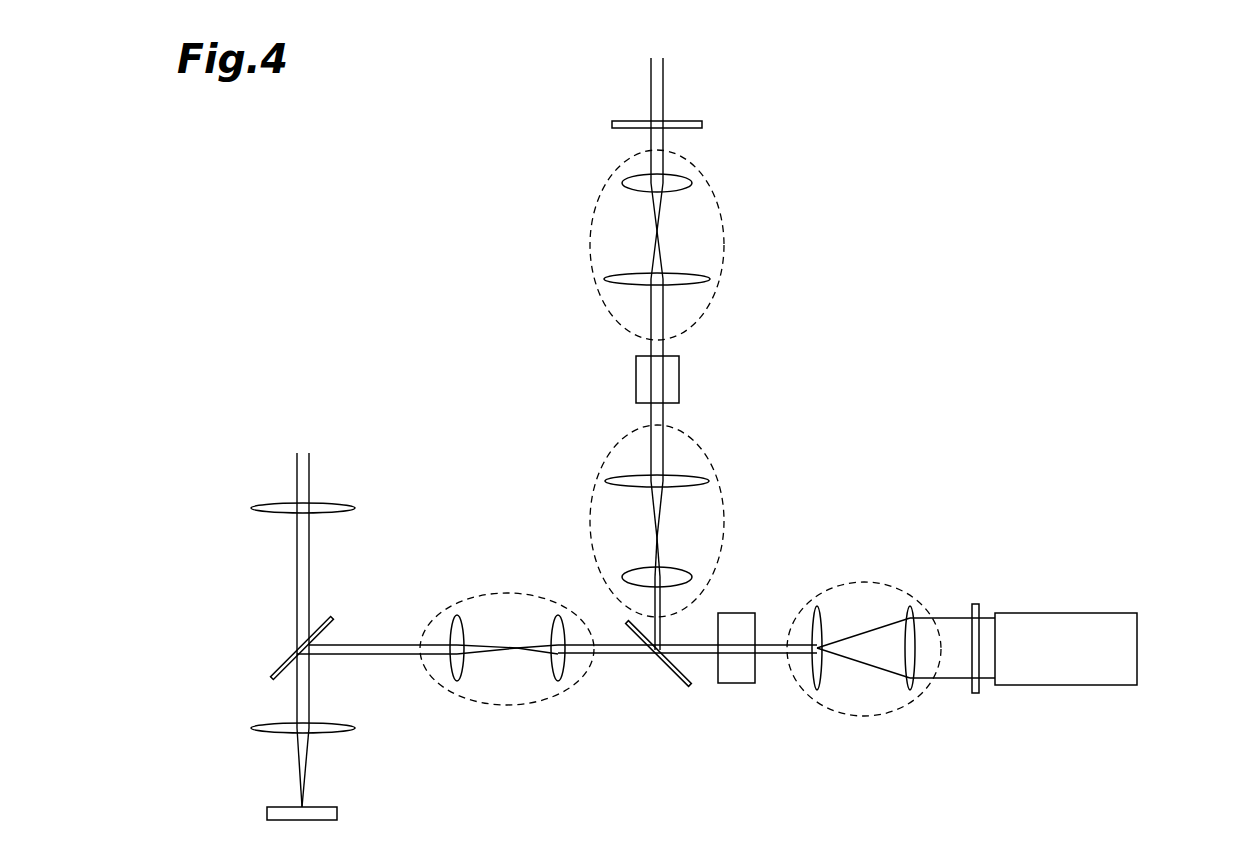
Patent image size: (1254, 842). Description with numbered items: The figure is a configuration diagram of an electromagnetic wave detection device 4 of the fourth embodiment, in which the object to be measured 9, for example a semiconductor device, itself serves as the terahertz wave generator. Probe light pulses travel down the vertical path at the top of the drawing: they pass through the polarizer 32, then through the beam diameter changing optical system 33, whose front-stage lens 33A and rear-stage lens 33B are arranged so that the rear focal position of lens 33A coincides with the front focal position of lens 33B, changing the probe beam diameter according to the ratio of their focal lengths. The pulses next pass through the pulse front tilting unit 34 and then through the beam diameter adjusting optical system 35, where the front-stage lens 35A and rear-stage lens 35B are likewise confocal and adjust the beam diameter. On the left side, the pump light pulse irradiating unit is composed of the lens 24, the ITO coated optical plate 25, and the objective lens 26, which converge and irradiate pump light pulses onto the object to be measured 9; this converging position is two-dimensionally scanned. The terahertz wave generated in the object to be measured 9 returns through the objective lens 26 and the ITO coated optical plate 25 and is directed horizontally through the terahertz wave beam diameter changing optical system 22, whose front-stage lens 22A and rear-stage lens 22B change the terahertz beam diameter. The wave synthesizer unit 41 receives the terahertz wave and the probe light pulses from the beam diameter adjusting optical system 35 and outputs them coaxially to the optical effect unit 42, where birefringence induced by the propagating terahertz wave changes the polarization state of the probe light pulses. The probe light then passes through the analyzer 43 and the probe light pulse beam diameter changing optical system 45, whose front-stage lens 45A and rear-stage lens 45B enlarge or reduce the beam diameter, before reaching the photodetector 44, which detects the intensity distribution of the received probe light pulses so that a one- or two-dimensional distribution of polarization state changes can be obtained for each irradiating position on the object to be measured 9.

The electromagnetic wave detection device 4 is at (979, 155).
The object to be measured 9 is at (272, 807).
The terahertz wave beam diameter changing optical system 22 is at (425, 670).
The lens 22A is at (457, 680).
The lens 22B is at (560, 680).
The lens 24 is at (277, 503).
The ITO coated optical plate 25 is at (283, 651).
The objective lens 26 is at (277, 725).
The polarizer 32 is at (683, 122).
The beam diameter changing optical system 33 is at (603, 187).
The lens 33A is at (685, 177).
The lens 33B is at (683, 275).
The pulse front tilting unit 34 is at (679, 378).
The beam diameter adjusting optical system 35 is at (603, 462).
The lens 35A is at (683, 475).
The lens 35B is at (685, 568).
The wave synthesizer unit 41 is at (670, 675).
The optical effect unit 42 is at (737, 683).
The analyzer 43 is at (977, 685).
The photodetector 44 is at (1065, 685).
The probe light pulse beam diameter changing optical system 45 is at (930, 685).
The lens 45A is at (820, 677).
The lens 45B is at (908, 687).